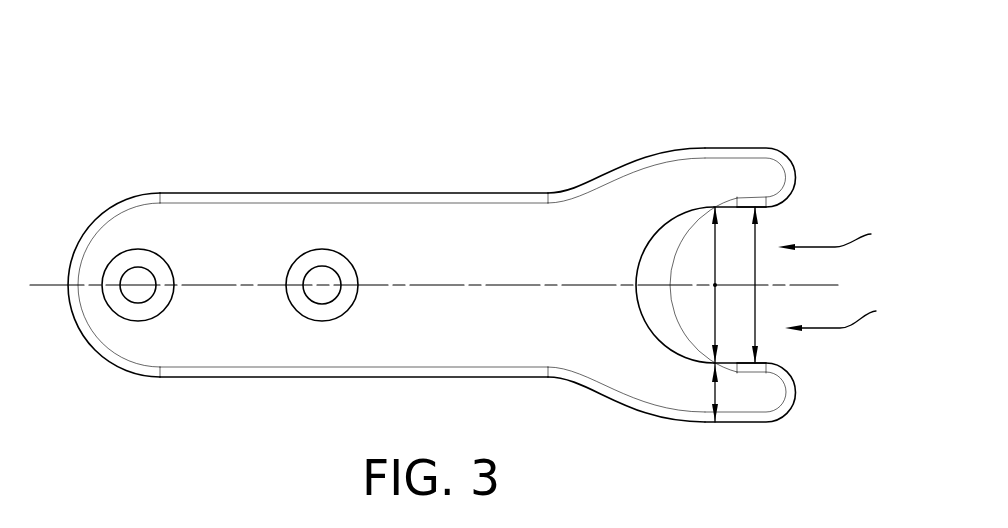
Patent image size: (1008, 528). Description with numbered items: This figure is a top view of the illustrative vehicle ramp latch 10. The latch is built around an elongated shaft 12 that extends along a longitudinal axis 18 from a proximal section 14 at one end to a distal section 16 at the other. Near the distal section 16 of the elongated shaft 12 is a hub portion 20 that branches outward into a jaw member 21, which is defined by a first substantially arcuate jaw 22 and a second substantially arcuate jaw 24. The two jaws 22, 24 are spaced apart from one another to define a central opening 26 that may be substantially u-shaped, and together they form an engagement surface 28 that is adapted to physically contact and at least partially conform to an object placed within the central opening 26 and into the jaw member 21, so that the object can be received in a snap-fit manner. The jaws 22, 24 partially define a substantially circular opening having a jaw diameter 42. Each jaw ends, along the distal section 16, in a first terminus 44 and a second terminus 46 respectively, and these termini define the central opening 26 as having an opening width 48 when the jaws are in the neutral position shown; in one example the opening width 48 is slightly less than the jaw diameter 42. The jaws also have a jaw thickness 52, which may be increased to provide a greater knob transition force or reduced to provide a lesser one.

The vehicle ramp latch 10 is at (487, 112).
The elongated shaft 12 is at (385, 218).
The proximal section 14 is at (107, 212).
The distal section 16 is at (655, 314).
The longitudinal axis 18 is at (45, 286).
The hub portion 20 is at (652, 238).
The jaw member 21 is at (841, 238).
The first substantially arcuate jaw 22 is at (731, 147).
The second substantially arcuate jaw 24 is at (765, 394).
The central opening 26 is at (847, 315).
The engagement surface 28 is at (672, 350).
The jaw diameter 42 is at (714, 272).
The first terminus 44 is at (770, 208).
The second terminus 46 is at (772, 364).
The opening width 48 is at (758, 301).
The jaw thickness 52 is at (710, 392).